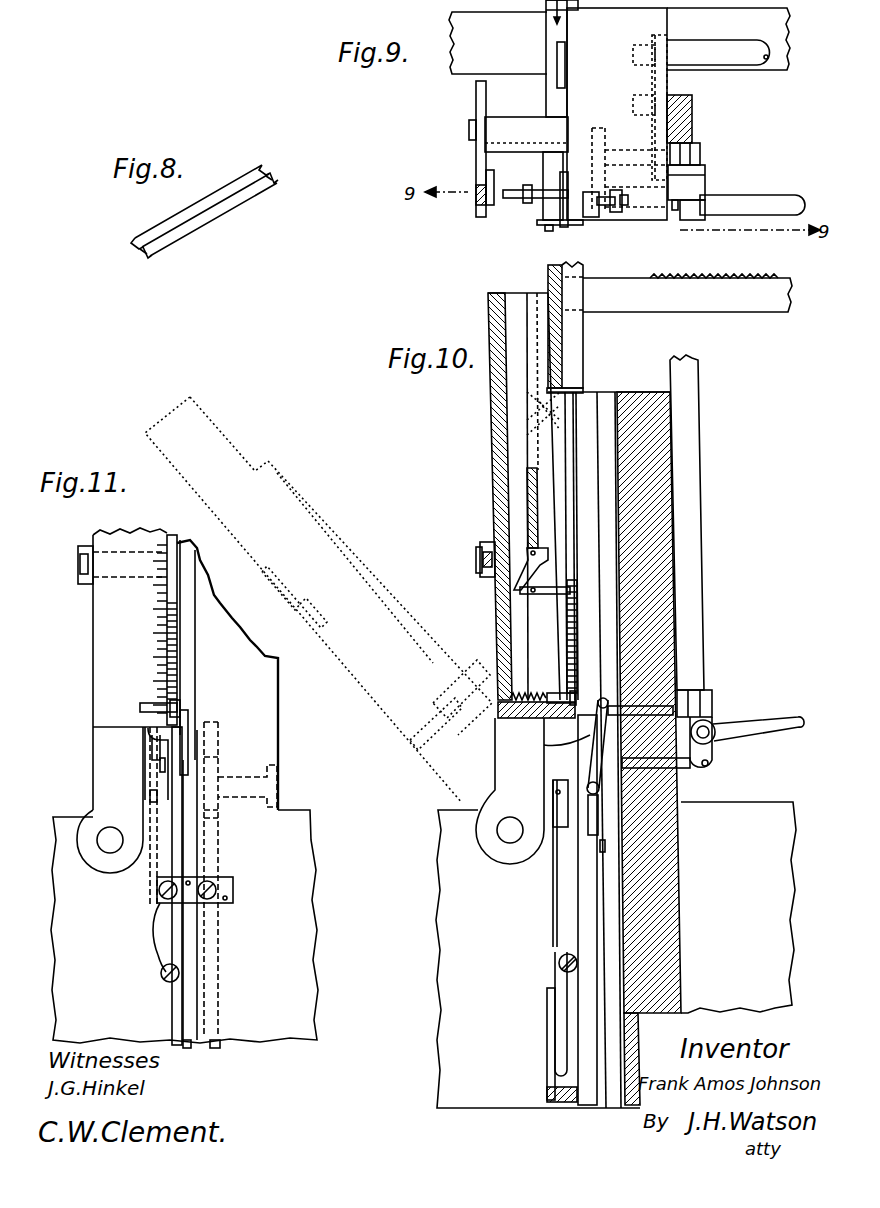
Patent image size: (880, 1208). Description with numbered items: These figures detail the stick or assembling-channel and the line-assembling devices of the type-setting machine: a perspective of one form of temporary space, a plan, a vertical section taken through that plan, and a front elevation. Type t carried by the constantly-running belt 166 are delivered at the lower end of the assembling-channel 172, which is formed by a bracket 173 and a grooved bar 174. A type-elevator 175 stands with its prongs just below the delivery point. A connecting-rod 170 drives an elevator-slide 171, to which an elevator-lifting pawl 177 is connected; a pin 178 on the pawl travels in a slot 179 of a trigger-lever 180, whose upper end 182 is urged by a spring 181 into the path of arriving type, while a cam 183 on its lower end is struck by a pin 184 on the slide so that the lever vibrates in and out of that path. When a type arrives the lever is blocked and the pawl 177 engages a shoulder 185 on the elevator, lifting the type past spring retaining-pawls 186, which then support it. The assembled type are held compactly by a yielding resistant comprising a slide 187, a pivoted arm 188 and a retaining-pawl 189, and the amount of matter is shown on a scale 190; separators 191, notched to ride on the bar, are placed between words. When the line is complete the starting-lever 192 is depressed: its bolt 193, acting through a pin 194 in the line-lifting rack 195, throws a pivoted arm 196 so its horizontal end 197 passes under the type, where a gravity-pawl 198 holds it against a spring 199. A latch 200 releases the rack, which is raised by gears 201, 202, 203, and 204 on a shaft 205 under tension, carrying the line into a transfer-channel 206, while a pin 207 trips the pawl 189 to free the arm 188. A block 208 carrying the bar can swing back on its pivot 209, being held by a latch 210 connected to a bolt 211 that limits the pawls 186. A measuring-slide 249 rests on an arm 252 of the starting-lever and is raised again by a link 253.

In FIG. 9, the constantly-running belt 166 is at (575, 10).
In FIG. 10, the connecting-rod 170 is at (547, 1022).
In FIG. 10, the elevator-slide 171 is at (568, 1050).
In FIG. 11, the elevator-slide 171 is at (170, 1022).
In FIG. 10, the assembling-channel or stick 172 is at (580, 527).
In FIG. 9, the bracket 173 is at (634, 119).
In FIG. 10, the bracket 173 is at (655, 477).
In FIG. 9, the grooved bar 174 is at (500, 163).
In FIG. 10, the grooved bar 174 is at (548, 500).
In FIG. 11, the grooved bar 174 is at (170, 535).
In FIG. 10, the type-elevator 175 is at (545, 719).
In FIG. 10, the elevator-lifting pawl 177 is at (560, 950).
In FIG. 11, the elevator-lifting pawl 177 is at (158, 925).
In FIG. 10, the pin 178 is at (558, 792).
In FIG. 11, the pin 178 is at (148, 798).
In FIG. 11, the slot 179 is at (150, 745).
In FIG. 11, the trigger-lever 180 is at (150, 865).
In FIG. 11, the spring 181 is at (222, 748).
In FIG. 11, the upper end of trigger-lever 182 is at (190, 716).
In FIG. 11, the cam 183 is at (158, 960).
In FIG. 11, the pin 184 is at (163, 980).
In FIG. 10, the shoulder 185 is at (520, 757).
In FIG. 11, the shoulder 185 is at (160, 765).
In FIG. 10, the spring retaining-pawls 186 is at (505, 690).
In FIG. 11, the spring retaining-pawls 186 is at (150, 703).
In FIG. 9, the slide 187 is at (520, 198).
In FIG. 10, the slide 187 is at (527, 482).
In FIG. 9, the pivoted arm 188 is at (545, 200).
In FIG. 10, the pivoted arm 188 is at (535, 594).
In FIG. 10, the retaining-pawl 189 is at (525, 560).
In FIG. 11, the scale 190 is at (160, 632).
In FIG. 8, the separators 191 is at (200, 228).
In FIG. 9, the separators 191 is at (555, 226).
In FIG. 10, the separators 191 is at (577, 668).
In FIG. 11, the separators 191 is at (180, 622).
In FIG. 9, the starting-lever 192 is at (775, 196).
In FIG. 10, the starting-lever 192 is at (770, 728).
In FIG. 10, the bolt 193 is at (690, 770).
In FIG. 10, the pin 194 is at (590, 795).
In FIG. 10, the line-lifting rack 195 is at (676, 938).
In FIG. 10, the pivoted arm 196 is at (592, 755).
In FIG. 9, the horizontal end 197 is at (585, 210).
In FIG. 10, the horizontal end 197 is at (555, 740).
In FIG. 9, the gravity-pawl 198 is at (618, 210).
In FIG. 10, the gravity-pawl 198 is at (610, 700).
In FIG. 10, the spring 199 is at (603, 830).
In FIG. 10, the latch 200 is at (660, 705).
In FIG. 9, the gear 201 is at (608, 128).
In FIG. 9, the gear 202 is at (706, 176).
In FIG. 9, the gear 203 is at (668, 88).
In FIG. 9, the gear 204 is at (655, 48).
In FIG. 9, the shaft 205 is at (750, 35).
In FIG. 10, the transfer-channel 206 is at (565, 342).
In FIG. 10, the pin 207 is at (525, 397).
In FIG. 10, the block 208 is at (505, 435).
In FIG. 10, the pivot 209 is at (503, 840).
In FIG. 9, the latch 210 is at (480, 147).
In FIG. 10, the latch 210 is at (480, 575).
In FIG. 11, the latch 210 is at (88, 585).
In FIG. 9, the bolt 211 is at (487, 185).
In FIG. 10, the bolt 211 is at (505, 648).
In FIG. 9, the measuring-slide 249 is at (700, 119).
In FIG. 10, the measuring-slide 249 is at (701, 378).
In FIG. 10, the arm of starting-lever 252 is at (712, 703).
In FIG. 9, the link 253 is at (703, 152).
In FIG. 9, the type t is at (560, 70).
In FIG. 10, the type t is at (578, 625).
In FIG. 11, the type t is at (180, 650).